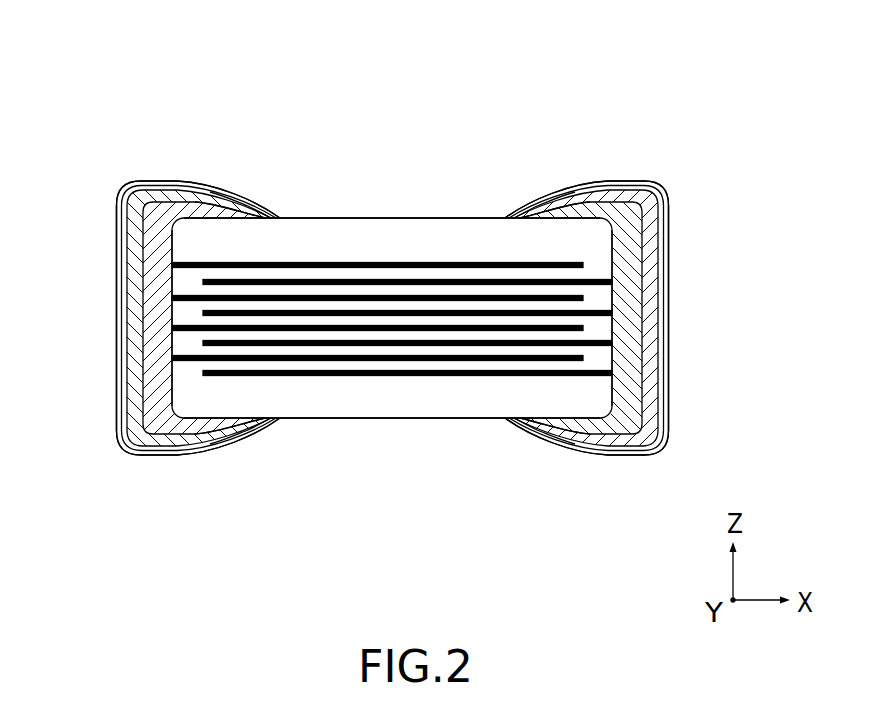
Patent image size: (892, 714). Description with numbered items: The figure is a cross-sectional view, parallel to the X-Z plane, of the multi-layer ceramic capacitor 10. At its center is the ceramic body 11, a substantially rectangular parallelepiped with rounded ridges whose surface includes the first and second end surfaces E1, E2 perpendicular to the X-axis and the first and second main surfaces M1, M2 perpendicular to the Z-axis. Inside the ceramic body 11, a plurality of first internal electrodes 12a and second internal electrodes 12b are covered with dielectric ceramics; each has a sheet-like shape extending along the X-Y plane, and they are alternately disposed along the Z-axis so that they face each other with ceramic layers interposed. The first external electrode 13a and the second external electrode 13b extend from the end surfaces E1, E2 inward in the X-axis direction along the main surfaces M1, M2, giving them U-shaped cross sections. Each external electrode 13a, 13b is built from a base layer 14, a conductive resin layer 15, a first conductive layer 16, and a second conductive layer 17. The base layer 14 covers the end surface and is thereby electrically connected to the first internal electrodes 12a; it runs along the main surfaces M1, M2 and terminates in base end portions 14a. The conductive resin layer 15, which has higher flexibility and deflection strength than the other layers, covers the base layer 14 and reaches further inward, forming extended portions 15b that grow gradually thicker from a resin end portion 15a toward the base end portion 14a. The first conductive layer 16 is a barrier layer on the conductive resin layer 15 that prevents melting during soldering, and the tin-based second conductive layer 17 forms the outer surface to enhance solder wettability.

The multi-layer ceramic capacitor 10 is at (118, 57).
The ceramic body 11 is at (419, 195).
The first internal electrodes 12a is at (327, 357).
The second internal electrodes 12b is at (438, 375).
The first external electrode 13a is at (117, 172).
The second external electrode 13b is at (661, 172).
The base layer 14 is at (132, 290).
The base end portions 14a is at (206, 192).
The conductive resin layer 15 is at (128, 208).
The resin end portion 15a is at (262, 198).
The extended portions 15b is at (239, 203).
The first conductive layer 16 is at (124, 333).
The second conductive layer 17 is at (118, 382).
The first main surface M1 is at (398, 419).
The second main surface M2 is at (313, 217).
The first end surface E1 is at (138, 318).
The second end surface E2 is at (665, 317).